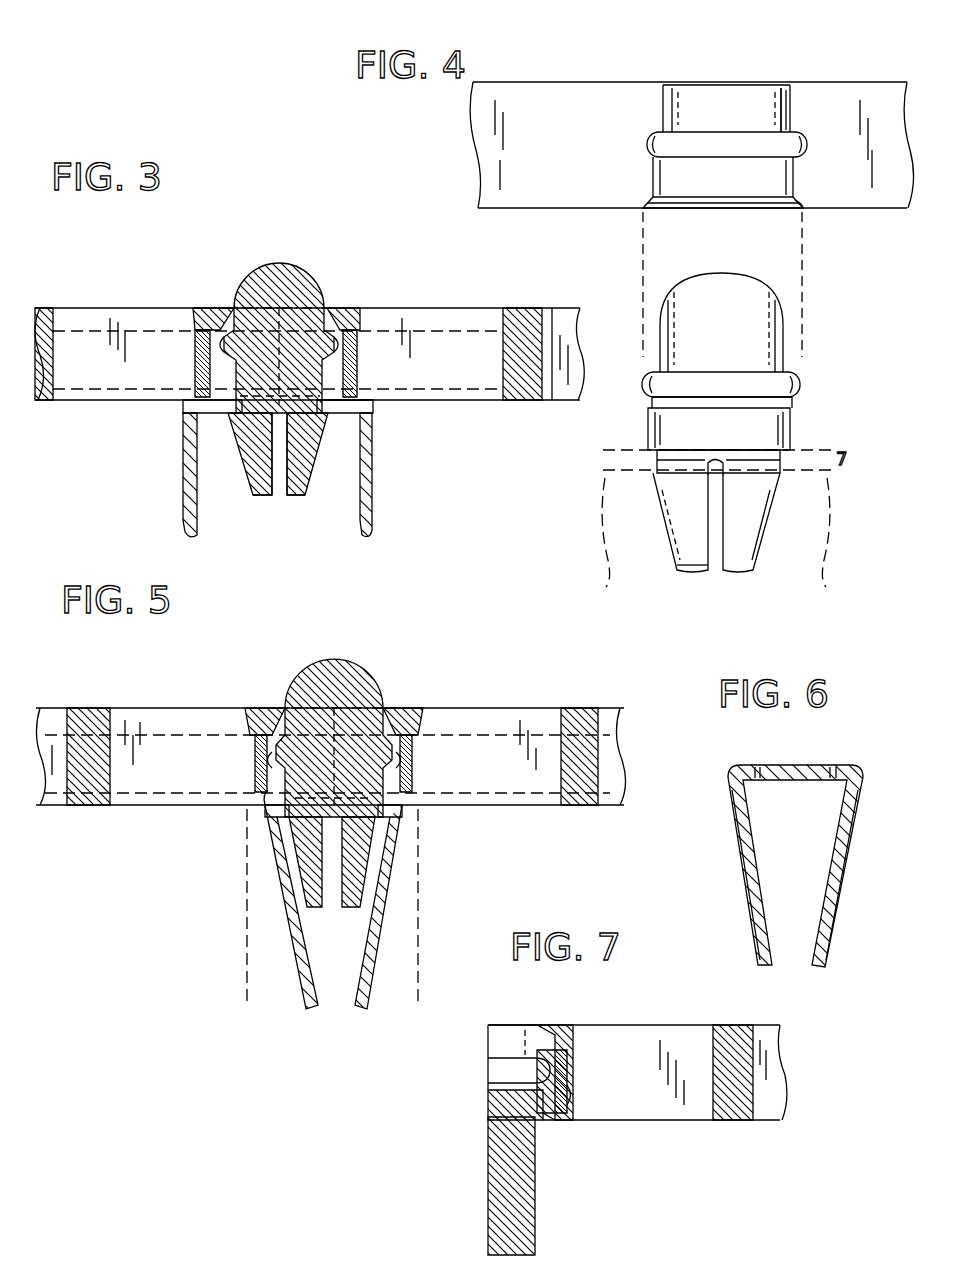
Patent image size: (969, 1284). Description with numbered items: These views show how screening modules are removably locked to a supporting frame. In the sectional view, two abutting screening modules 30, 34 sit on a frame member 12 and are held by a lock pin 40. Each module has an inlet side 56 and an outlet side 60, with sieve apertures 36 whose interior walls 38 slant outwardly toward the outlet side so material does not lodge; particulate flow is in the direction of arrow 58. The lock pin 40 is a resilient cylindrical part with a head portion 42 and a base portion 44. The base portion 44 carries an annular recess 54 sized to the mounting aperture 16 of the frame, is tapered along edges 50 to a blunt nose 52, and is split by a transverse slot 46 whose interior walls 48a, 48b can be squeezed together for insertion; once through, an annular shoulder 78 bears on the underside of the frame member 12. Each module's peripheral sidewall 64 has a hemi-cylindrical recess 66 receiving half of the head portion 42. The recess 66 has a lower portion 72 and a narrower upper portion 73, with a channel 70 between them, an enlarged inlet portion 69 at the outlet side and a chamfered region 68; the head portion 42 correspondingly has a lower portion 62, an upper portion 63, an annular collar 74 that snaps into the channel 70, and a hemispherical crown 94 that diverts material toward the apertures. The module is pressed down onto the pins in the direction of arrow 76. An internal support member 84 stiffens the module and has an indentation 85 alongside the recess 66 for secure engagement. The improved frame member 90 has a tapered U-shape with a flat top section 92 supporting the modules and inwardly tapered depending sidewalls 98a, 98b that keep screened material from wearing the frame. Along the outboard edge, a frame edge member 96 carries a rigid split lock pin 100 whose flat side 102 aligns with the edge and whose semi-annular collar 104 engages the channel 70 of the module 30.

In FIG. 3, the frame member 12 is at (183, 455).
In FIG. 4, the frame member 12 is at (815, 450).
In FIG. 6, the mounting aperture 16 is at (770, 770).
In FIG. 3, the screening module 30 is at (76, 296).
In FIG. 4, the screening module 30 is at (683, 74).
In FIG. 5, the screening module 30 is at (190, 834).
In FIG. 7, the screening module 30 is at (656, 1020).
In FIG. 3, the screening module 34 is at (393, 298).
In FIG. 5, the screening module 34 is at (500, 703).
In FIG. 3, the sieve aperture 36 is at (280, 362).
In FIG. 5, the sieve aperture 36 is at (338, 745).
In FIG. 3, the interior wall 38 is at (193, 318).
In FIG. 5, the interior wall 38 is at (565, 787).
In FIG. 3, the lock pin 40 is at (321, 374).
In FIG. 4, the lock pin 40 is at (751, 437).
In FIG. 5, the lock pin 40 is at (326, 760).
In FIG. 4, the head portion 42 is at (737, 344).
In FIG. 4, the base portion 44 is at (769, 543).
In FIG. 3, the transverse slot 46 is at (280, 470).
In FIG. 4, the transverse slot 46 is at (708, 505).
In FIG. 4, the interior wall 48a is at (690, 577).
In FIG. 4, the interior wall 48b is at (718, 577).
In FIG. 3, the tapered edge 50 is at (232, 475).
In FIG. 4, the tapered edge 50 is at (766, 530).
In FIG. 3, the blunt nose 52 is at (298, 497).
In FIG. 4, the blunt nose 52 is at (690, 572).
In FIG. 4, the annular recess 54 is at (605, 460).
In FIG. 3, the inlet side 56 is at (117, 306).
In FIG. 4, the inlet side 56 is at (572, 82).
In FIG. 5, the inlet side 56 is at (178, 706).
In FIG. 3, the flow direction 58 is at (140, 290).
In FIG. 3, the outlet side 60 is at (115, 403).
In FIG. 4, the outlet side 60 is at (538, 212).
In FIG. 5, the outlet side 60 is at (170, 807).
In FIG. 7, the outlet side 60 is at (675, 1122).
In FIG. 4, the lower portion 62 is at (648, 428).
In FIG. 4, the upper portion 63 is at (660, 345).
In FIG. 4, the peripheral sidewall 64 is at (569, 147).
In FIG. 4, the hemi-cylindrical recess 66 is at (719, 133).
In FIG. 4, the chamfered region 68 is at (658, 210).
In FIG. 4, the inlet portion 69 is at (792, 212).
In FIG. 5, the inlet portion 69 is at (265, 818).
In FIG. 7, the inlet portion 69 is at (560, 1118).
In FIG. 4, the channel 70 is at (650, 138).
In FIG. 7, the channel 70 is at (540, 1068).
In FIG. 4, the lower portion 72 is at (660, 172).
In FIG. 4, the upper portion 73 is at (790, 108).
In FIG. 7, the upper portion 73 is at (530, 1030).
In FIG. 3, the annular collar 74 is at (362, 352).
In FIG. 4, the annular collar 74 is at (645, 385).
In FIG. 5, the annular collar 74 is at (255, 752).
In FIG. 4, the arrow 76 is at (722, 172).
In FIG. 4, the annular shoulder 78 is at (790, 478).
In FIG. 3, the internal support member 84 is at (456, 402).
In FIG. 3, the indentation 85 is at (195, 355).
In FIG. 5, the indentation 85 is at (414, 762).
In FIG. 7, the indentation 85 is at (570, 1070).
In FIG. 5, the frame member 90 is at (369, 925).
In FIG. 6, the frame member 90 is at (784, 843).
In FIG. 5, the flat top section 92 is at (333, 811).
In FIG. 6, the flat top section 92 is at (815, 765).
In FIG. 4, the hemispherical crown 94 is at (760, 286).
In FIG. 5, the hemispherical crown 94 is at (366, 660).
In FIG. 7, the frame edge member 96 is at (476, 1116).
In FIG. 5, the depending sidewall 98a is at (292, 1008).
In FIG. 6, the depending sidewall 98a is at (746, 905).
In FIG. 5, the depending sidewall 98b is at (365, 1005).
In FIG. 6, the depending sidewall 98b is at (838, 905).
In FIG. 7, the split lock pin 100 is at (500, 1025).
In FIG. 7, the flat side 102 is at (488, 1052).
In FIG. 7, the semi-annular collar 104 is at (572, 1095).